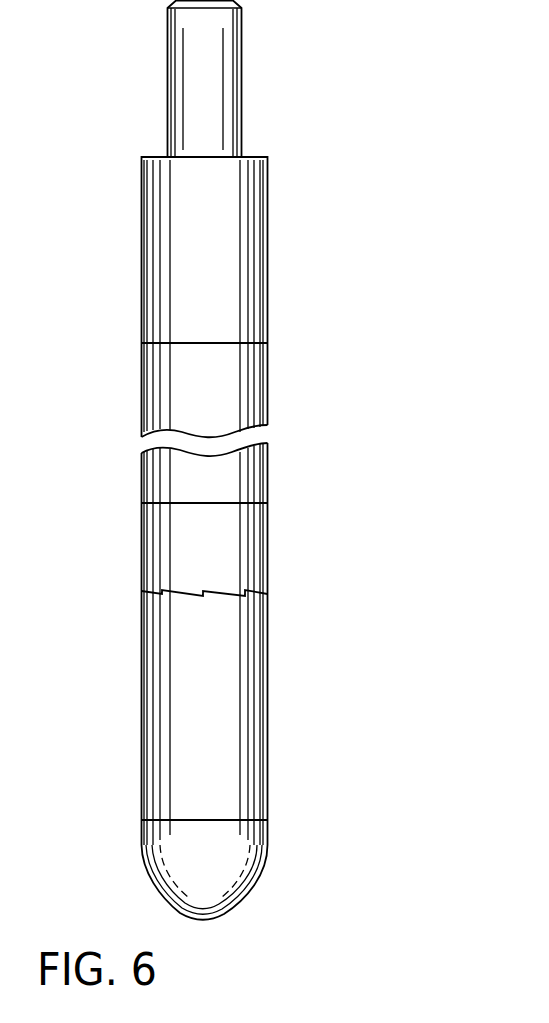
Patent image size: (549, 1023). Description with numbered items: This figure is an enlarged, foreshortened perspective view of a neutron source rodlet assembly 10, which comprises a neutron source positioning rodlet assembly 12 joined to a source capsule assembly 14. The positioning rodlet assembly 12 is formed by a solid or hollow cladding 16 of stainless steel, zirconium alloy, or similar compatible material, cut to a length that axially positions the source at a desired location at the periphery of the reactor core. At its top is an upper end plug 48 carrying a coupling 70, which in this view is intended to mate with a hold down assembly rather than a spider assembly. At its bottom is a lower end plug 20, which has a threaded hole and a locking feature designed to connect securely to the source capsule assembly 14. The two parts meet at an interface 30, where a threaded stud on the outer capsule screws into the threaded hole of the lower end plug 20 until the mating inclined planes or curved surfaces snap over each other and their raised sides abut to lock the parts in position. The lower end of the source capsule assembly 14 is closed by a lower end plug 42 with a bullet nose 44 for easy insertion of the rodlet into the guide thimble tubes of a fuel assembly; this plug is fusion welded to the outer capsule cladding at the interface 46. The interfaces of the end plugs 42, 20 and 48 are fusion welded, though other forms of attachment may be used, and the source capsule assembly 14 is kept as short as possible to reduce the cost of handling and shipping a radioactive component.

The neutron source rodlet assembly 10 is at (295, 246).
The neutron source positioning rodlet assembly 12 is at (268, 405).
The source capsule assembly 14 is at (141, 745).
The cladding 16 is at (141, 405).
The lower end plug 20 is at (141, 567).
The interface 30 is at (222, 593).
The lower end plug 42 is at (141, 858).
The bullet nose 44 is at (265, 863).
The interface 46 is at (268, 343).
The upper end plug 48 is at (141, 265).
The coupling 70 is at (241, 31).